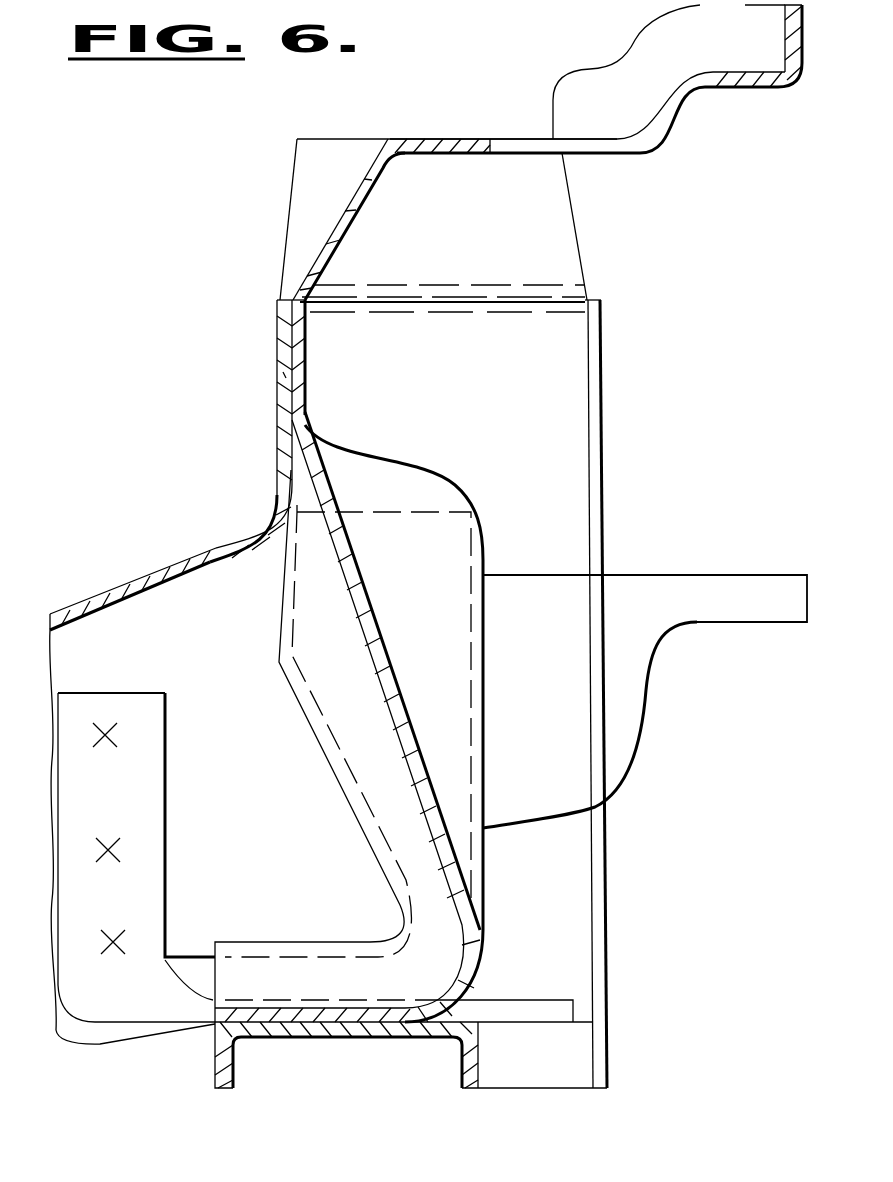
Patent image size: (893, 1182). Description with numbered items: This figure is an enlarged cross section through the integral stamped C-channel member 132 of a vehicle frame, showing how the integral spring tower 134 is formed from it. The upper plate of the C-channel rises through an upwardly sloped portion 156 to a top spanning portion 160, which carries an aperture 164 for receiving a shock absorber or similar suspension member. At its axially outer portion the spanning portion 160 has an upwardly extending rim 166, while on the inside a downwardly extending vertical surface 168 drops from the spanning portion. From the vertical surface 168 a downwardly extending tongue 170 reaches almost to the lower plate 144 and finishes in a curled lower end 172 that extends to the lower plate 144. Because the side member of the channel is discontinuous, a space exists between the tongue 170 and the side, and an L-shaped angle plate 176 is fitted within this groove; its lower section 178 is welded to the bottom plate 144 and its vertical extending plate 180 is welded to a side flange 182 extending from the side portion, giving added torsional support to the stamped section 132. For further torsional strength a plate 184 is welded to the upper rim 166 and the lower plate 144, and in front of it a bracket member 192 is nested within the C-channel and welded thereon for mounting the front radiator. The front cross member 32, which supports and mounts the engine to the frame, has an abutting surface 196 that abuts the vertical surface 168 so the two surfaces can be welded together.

The front cross member 32 is at (213, 549).
The integral stamped C-channel member 132 is at (388, 125).
The integral spring tower 134 is at (268, 291).
The lower plate 144 is at (330, 1040).
The upwardly sloped portion 156 is at (568, 325).
The top spanning portion 160 is at (452, 140).
The aperture 164 is at (649, 134).
The upwardly extending rim 166 is at (790, 23).
The downwardly extending vertical surface 168 is at (304, 344).
The downwardly extending tongue 170 is at (378, 640).
The curled lower end 172 is at (320, 990).
The L-shaped angle plate 176 is at (160, 877).
The lower section 178 is at (516, 1010).
The vertical extending plate 180 is at (142, 766).
The side flange 182 is at (115, 628).
The plate 184 is at (596, 466).
The bracket member 192 is at (712, 585).
The abutting surface 196 is at (283, 373).